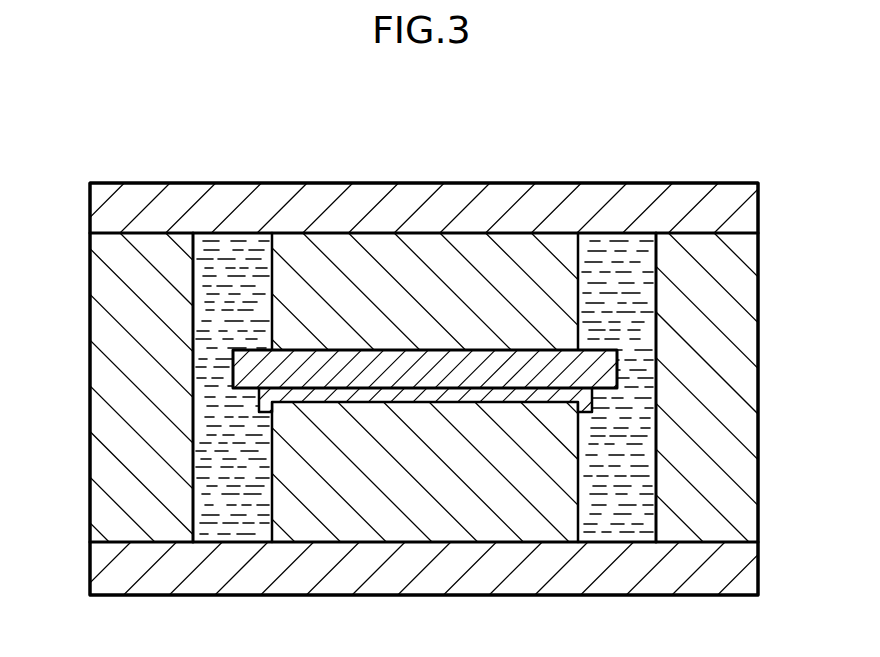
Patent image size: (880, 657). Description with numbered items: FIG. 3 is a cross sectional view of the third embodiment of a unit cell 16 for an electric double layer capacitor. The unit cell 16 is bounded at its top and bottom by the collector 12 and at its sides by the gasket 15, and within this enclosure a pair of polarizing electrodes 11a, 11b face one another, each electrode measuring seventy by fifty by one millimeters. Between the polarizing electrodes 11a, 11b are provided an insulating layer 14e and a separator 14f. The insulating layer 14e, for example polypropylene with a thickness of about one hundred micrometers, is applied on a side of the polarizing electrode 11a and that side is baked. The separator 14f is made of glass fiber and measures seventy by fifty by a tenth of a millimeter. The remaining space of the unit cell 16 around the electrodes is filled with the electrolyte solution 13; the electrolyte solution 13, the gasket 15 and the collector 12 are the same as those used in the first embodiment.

The unit cell 16 is at (170, 167).
The collector 12 is at (575, 203).
The gasket 15 is at (130, 500).
The electrolyte solution 13 is at (628, 292).
The polarizing electrode 11b is at (420, 283).
The polarizing electrode 11a is at (444, 518).
The separator 14f is at (507, 380).
The insulating layer 14e is at (510, 402).